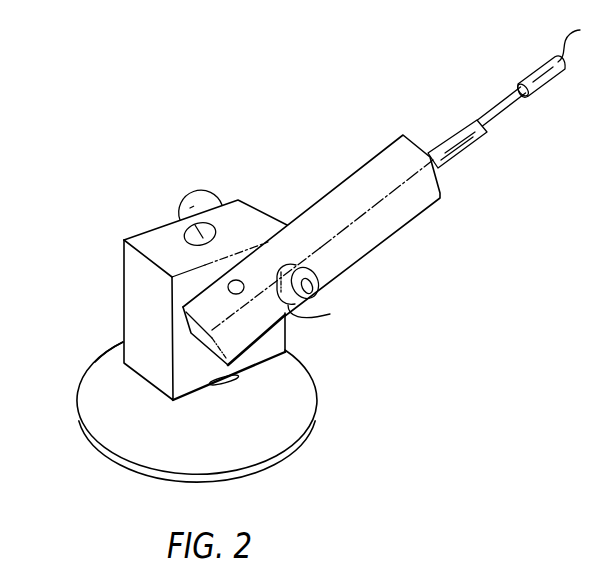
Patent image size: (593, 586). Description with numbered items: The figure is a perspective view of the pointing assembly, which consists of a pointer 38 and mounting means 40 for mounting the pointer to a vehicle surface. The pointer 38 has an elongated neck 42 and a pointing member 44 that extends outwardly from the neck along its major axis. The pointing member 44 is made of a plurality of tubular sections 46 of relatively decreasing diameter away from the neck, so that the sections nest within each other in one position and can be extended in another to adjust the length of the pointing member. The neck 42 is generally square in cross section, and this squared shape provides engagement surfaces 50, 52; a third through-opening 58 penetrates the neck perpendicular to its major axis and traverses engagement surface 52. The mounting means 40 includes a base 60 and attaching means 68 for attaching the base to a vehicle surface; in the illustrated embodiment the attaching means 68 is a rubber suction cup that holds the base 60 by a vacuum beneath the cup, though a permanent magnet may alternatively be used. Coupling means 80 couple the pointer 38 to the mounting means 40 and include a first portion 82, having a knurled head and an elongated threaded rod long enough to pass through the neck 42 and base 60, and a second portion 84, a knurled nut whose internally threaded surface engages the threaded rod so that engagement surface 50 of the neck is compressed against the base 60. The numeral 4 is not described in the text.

The flexible shaft 4 is at (575, 41).
The pointer 38 is at (428, 219).
The mounting means 40 is at (165, 300).
The neck 42 is at (287, 342).
The pointing member 44 is at (508, 113).
The tubular sections 46 is at (492, 111).
The engagement surface 50 is at (95, 362).
The engagement surface 52 is at (197, 348).
The third through-opening 58 is at (238, 280).
The base 60 is at (132, 317).
The attaching means 68 is at (317, 405).
The coupling means 80 is at (318, 274).
The first portion 82 is at (296, 318).
The second portion 84 is at (204, 188).